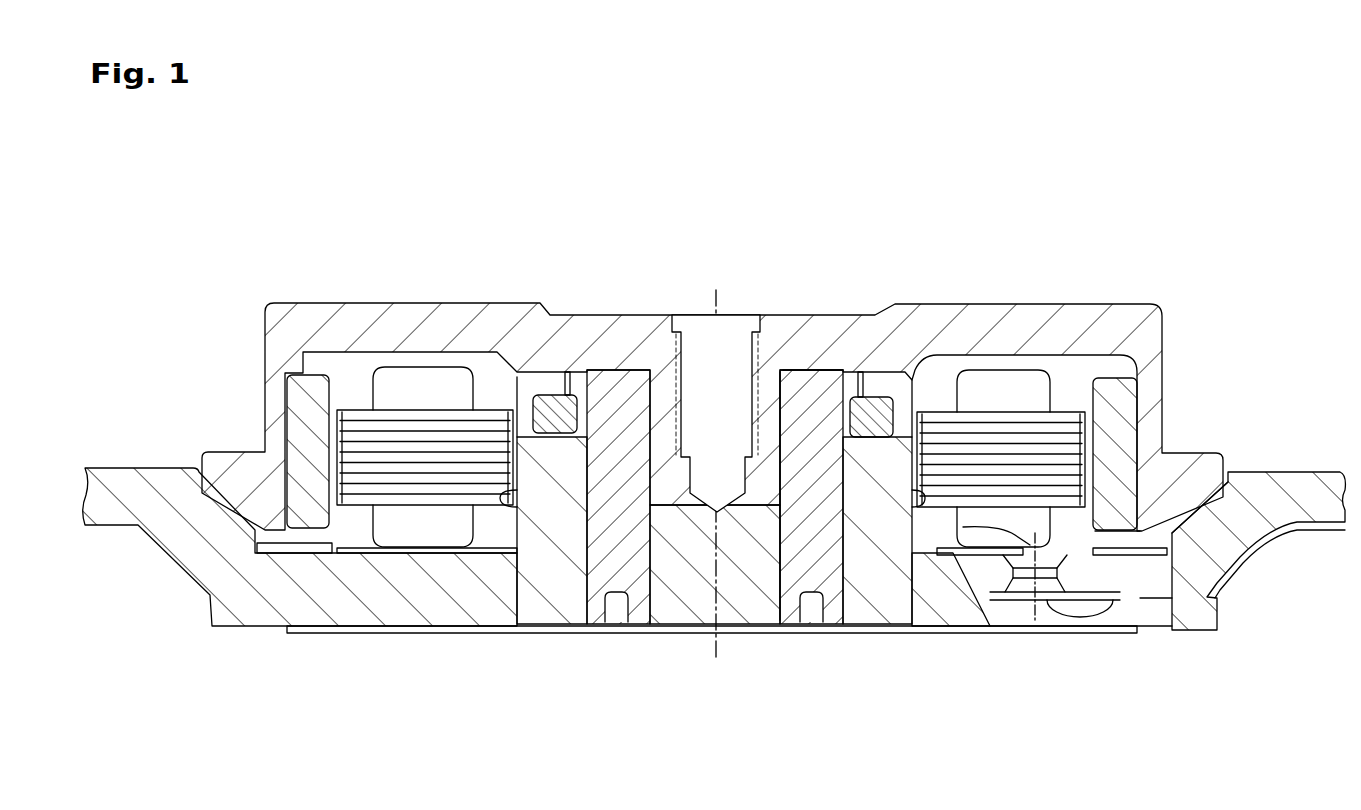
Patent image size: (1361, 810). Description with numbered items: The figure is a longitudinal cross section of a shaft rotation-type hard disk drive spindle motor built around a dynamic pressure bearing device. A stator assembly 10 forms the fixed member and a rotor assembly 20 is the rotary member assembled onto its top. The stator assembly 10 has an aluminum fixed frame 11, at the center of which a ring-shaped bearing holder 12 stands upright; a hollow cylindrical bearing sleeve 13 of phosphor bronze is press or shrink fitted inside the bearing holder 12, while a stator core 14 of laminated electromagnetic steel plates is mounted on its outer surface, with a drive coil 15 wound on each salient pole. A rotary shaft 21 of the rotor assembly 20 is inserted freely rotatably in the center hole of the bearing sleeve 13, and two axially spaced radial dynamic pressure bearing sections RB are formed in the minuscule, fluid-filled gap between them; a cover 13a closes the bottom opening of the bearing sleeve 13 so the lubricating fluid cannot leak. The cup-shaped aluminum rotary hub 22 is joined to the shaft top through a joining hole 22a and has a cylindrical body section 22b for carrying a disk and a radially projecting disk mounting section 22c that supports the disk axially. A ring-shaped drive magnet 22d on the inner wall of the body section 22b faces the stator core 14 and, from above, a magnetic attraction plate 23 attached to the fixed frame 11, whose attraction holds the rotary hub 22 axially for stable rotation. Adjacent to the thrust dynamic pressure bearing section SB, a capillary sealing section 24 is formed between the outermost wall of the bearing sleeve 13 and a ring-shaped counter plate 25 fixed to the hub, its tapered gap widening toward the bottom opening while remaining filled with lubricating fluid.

The stator assembly 10 is at (714, 630).
The fixed frame 11 is at (960, 597).
The bearing holder 12 is at (548, 527).
The bearing sleeve 13 is at (825, 547).
The cover 13a is at (660, 630).
The stator core 14 is at (360, 407).
The drive coil 15 is at (432, 390).
The rotor assembly 20 is at (752, 431).
The rotary shaft 21 is at (698, 315).
The rotary hub 22 is at (752, 370).
The joining hole 22a is at (767, 315).
The body section 22b is at (752, 370).
The disk mounting section 22c is at (752, 370).
The ring-shaped drive magnet 22d is at (1113, 532).
The magnetic attraction plate 23 is at (1172, 540).
The capillary sealing section 24 is at (860, 397).
The counter plate 25 is at (873, 370).
The thrust dynamic pressure bearing section SB is at (855, 367).
The radial dynamic pressure bearing section RB is at (785, 415).